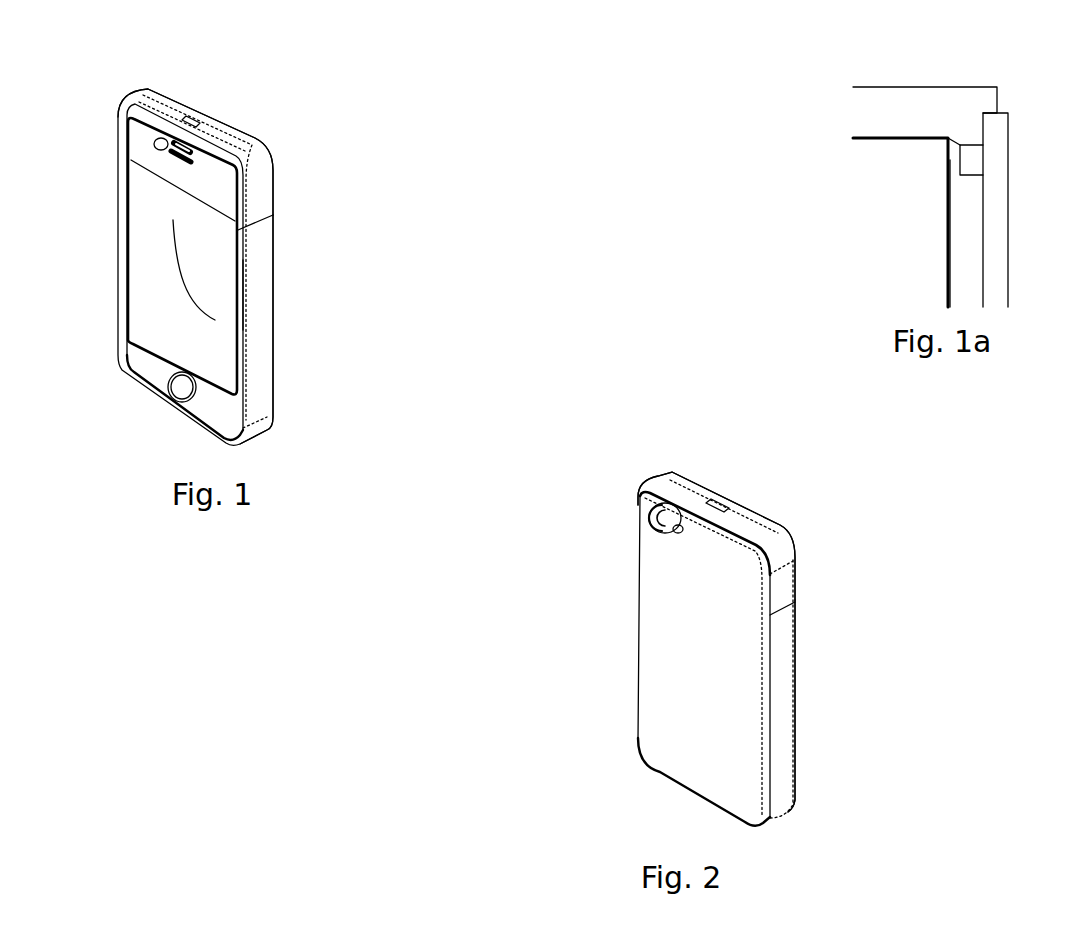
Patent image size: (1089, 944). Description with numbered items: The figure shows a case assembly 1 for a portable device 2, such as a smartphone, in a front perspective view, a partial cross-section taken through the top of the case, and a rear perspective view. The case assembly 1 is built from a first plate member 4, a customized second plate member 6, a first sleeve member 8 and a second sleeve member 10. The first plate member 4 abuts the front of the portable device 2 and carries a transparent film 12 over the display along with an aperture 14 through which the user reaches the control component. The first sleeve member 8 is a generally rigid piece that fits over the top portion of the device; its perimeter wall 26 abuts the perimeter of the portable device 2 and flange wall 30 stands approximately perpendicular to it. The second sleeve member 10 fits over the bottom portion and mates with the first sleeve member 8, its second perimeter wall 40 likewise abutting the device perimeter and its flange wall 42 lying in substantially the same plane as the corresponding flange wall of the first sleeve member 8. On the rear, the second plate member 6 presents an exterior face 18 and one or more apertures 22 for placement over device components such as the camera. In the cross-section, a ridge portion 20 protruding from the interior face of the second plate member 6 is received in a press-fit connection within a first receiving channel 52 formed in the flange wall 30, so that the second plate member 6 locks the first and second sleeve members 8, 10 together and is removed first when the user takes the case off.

In FIG. 1, the case assembly 1 is at (306, 136).
In FIG. 2, the case assembly 1 is at (821, 532).
In FIG. 1A, the portable device 2 is at (887, 200).
In FIG. 1, the first plate member 4 is at (127, 358).
In FIG. 1A, the second plate member 6 is at (1010, 201).
In FIG. 2, the second plate member 6 is at (656, 600).
In FIG. 1, the first sleeve member 8 is at (202, 102).
In FIG. 1A, the first sleeve member 8 is at (963, 84).
In FIG. 2, the first sleeve member 8 is at (696, 471).
In FIG. 1, the second sleeve member 10 is at (274, 386).
In FIG. 2, the second sleeve member 10 is at (779, 809).
In FIG. 1, the transparent film 12 is at (215, 320).
In FIG. 1, the aperture 14 is at (177, 392).
In FIG. 2, the exterior face 18 is at (663, 635).
In FIG. 1A, the ridge portion 20 is at (970, 158).
In FIG. 2, the apertures 22 is at (650, 505).
In FIG. 1, the perimeter wall 26 is at (160, 100).
In FIG. 2, the perimeter wall 26 is at (747, 523).
In FIG. 1A, the flange wall 30 is at (963, 278).
In FIG. 1, the second perimeter wall 40 is at (256, 243).
In FIG. 1, the flange wall 42 is at (238, 292).
In FIG. 1A, the first receiving channel 52 is at (962, 158).